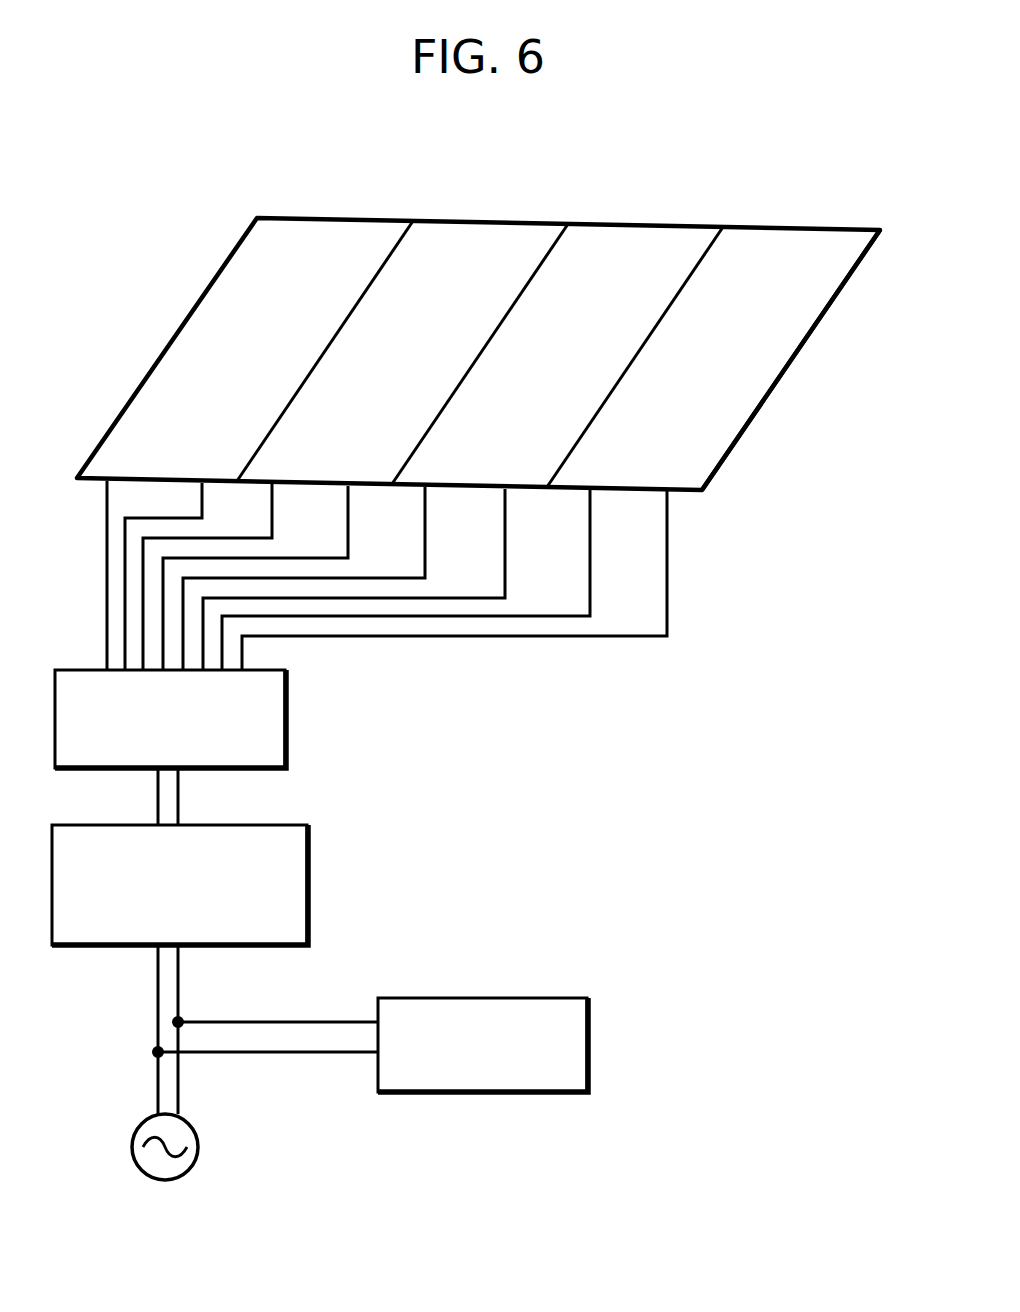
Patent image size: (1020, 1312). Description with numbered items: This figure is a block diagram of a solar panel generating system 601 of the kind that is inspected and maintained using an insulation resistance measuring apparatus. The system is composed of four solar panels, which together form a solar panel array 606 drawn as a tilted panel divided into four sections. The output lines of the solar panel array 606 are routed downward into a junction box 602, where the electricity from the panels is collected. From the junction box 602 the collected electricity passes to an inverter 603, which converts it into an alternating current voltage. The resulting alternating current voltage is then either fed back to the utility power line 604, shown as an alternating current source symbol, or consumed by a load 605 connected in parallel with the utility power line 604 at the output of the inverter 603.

The solar panel generating system 601 is at (166, 245).
The junction box 602 is at (287, 722).
The inverter 603 is at (307, 880).
The utility power line 604 is at (198, 1150).
The load 605 is at (587, 1052).
The solar panel array 606 is at (750, 228).